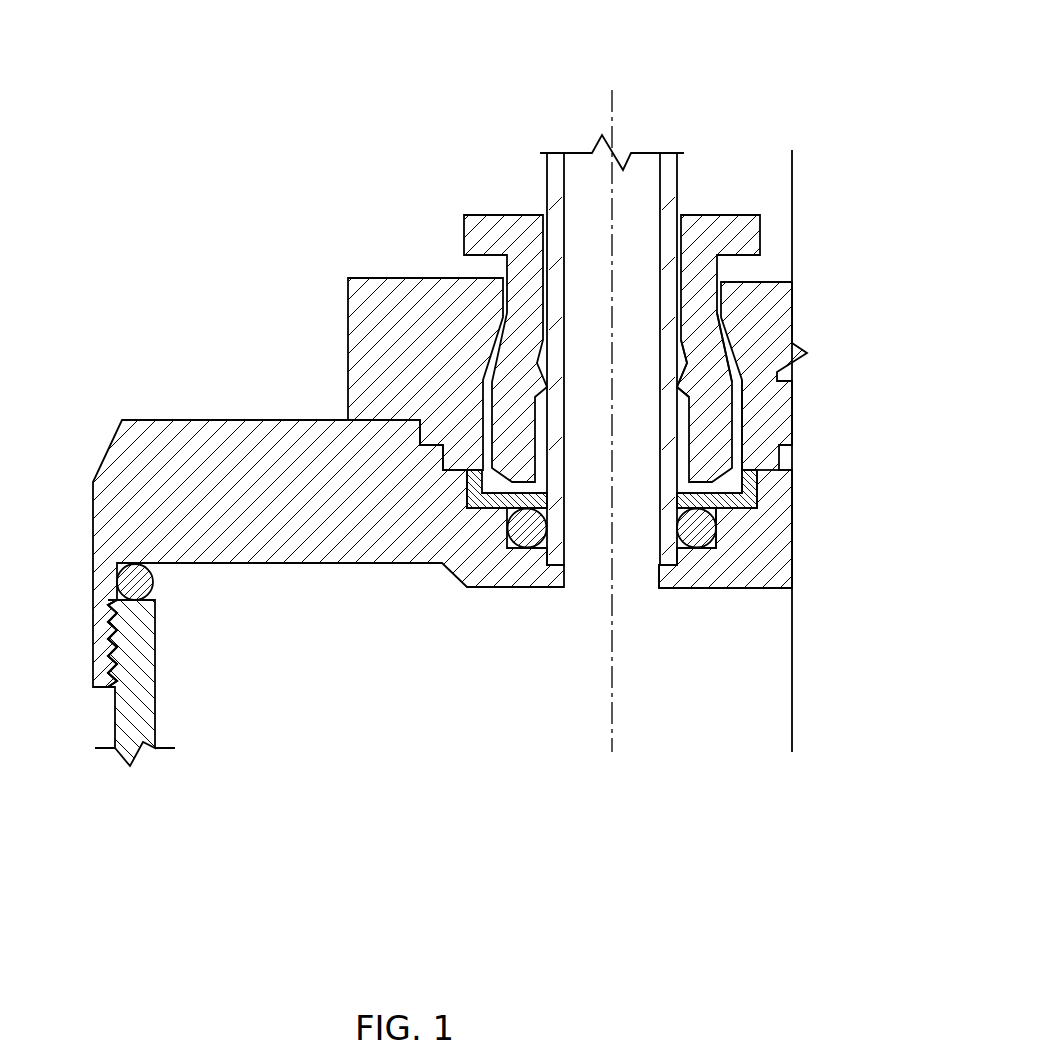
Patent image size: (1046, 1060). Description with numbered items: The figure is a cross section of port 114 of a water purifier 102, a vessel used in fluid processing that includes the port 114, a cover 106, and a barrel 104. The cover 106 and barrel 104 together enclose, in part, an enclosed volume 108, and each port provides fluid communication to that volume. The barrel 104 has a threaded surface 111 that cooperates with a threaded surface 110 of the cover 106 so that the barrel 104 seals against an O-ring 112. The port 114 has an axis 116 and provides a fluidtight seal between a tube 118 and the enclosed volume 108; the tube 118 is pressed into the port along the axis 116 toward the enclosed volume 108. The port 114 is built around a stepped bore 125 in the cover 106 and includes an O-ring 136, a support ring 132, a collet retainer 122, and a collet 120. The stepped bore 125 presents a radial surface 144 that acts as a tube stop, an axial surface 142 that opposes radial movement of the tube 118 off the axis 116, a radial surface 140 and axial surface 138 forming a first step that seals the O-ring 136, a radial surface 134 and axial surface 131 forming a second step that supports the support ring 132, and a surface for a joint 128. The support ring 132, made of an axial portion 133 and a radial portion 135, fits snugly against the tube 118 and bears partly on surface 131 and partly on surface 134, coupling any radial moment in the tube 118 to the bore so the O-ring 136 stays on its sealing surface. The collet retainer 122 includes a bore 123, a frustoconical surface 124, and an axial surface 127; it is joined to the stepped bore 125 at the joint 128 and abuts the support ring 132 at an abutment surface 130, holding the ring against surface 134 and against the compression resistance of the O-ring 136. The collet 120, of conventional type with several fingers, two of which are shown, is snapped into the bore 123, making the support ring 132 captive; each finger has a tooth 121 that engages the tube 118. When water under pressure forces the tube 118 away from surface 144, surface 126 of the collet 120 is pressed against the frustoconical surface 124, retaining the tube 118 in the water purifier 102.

The water purifier 102 is at (118, 52).
The barrel 104 is at (160, 725).
The cover 106 is at (245, 418).
The enclosed volume 108 is at (400, 717).
The threaded surface 110 is at (106, 657).
The threaded surface 111 is at (120, 632).
The O-ring 112 is at (158, 568).
The port 114 is at (304, 190).
The axis 116 is at (613, 138).
The tube 118 is at (678, 193).
The collet 120 is at (762, 236).
The tooth 121 is at (686, 398).
The collet retainer 122 is at (780, 292).
The bore 123 is at (722, 298).
The frustoconical surface 124 is at (730, 330).
The stepped bore 125 is at (658, 574).
The surface 126 is at (722, 372).
The axial surface 127 is at (728, 396).
The joint 128 is at (785, 432).
The abutment surface 130 is at (746, 460).
The axial surface 131 is at (748, 490).
The support ring 132 is at (738, 503).
The axial portion 133 is at (476, 478).
The radial surface 134 is at (708, 530).
The radial portion 135 is at (498, 508).
The O-ring 136 is at (704, 562).
The axial surface 138 is at (748, 545).
The radial surface 140 is at (738, 578).
The axial surface 142 is at (690, 576).
The radial surface 144 is at (702, 592).